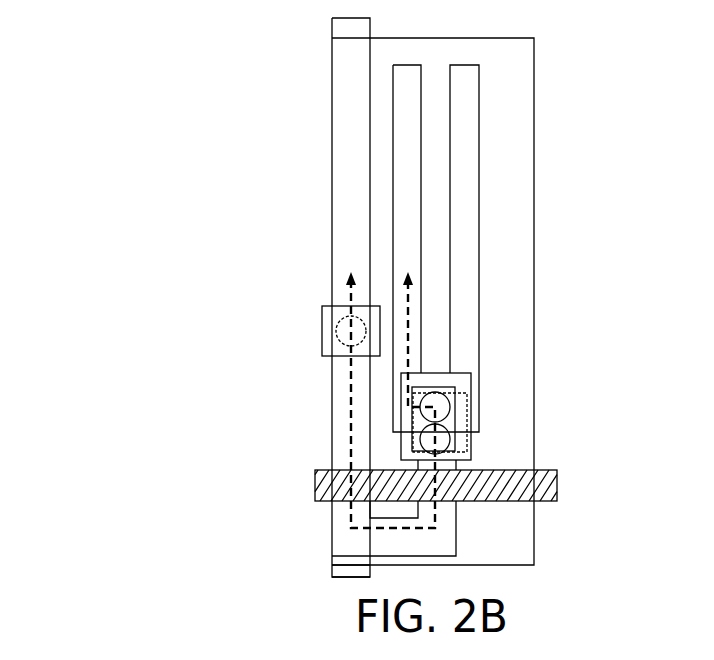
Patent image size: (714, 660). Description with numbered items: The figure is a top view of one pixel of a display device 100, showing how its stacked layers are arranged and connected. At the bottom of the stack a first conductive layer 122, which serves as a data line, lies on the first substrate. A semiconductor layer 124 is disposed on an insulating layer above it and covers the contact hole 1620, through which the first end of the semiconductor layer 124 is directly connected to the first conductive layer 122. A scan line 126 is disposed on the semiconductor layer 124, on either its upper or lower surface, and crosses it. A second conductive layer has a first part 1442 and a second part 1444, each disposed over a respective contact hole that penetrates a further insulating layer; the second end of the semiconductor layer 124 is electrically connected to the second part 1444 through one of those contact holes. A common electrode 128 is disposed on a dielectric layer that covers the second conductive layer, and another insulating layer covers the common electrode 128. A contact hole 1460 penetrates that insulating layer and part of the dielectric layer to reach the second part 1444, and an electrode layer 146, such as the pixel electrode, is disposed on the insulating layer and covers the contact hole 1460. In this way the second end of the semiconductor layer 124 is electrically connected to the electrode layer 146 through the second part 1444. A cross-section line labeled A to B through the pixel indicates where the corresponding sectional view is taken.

The display device 100 is at (62, 37).
The first conductive layer 122 is at (336, 572).
The semiconductor layer 124 is at (340, 407).
The scan line 126 is at (318, 481).
The common electrode 128 is at (517, 532).
The electrode layer 146 is at (465, 97).
The first part of the second conductive layer 1442 is at (323, 335).
The second part of the second conductive layer 1444 is at (437, 440).
The contact hole 1460 is at (447, 403).
The contact hole 1620 is at (341, 312).